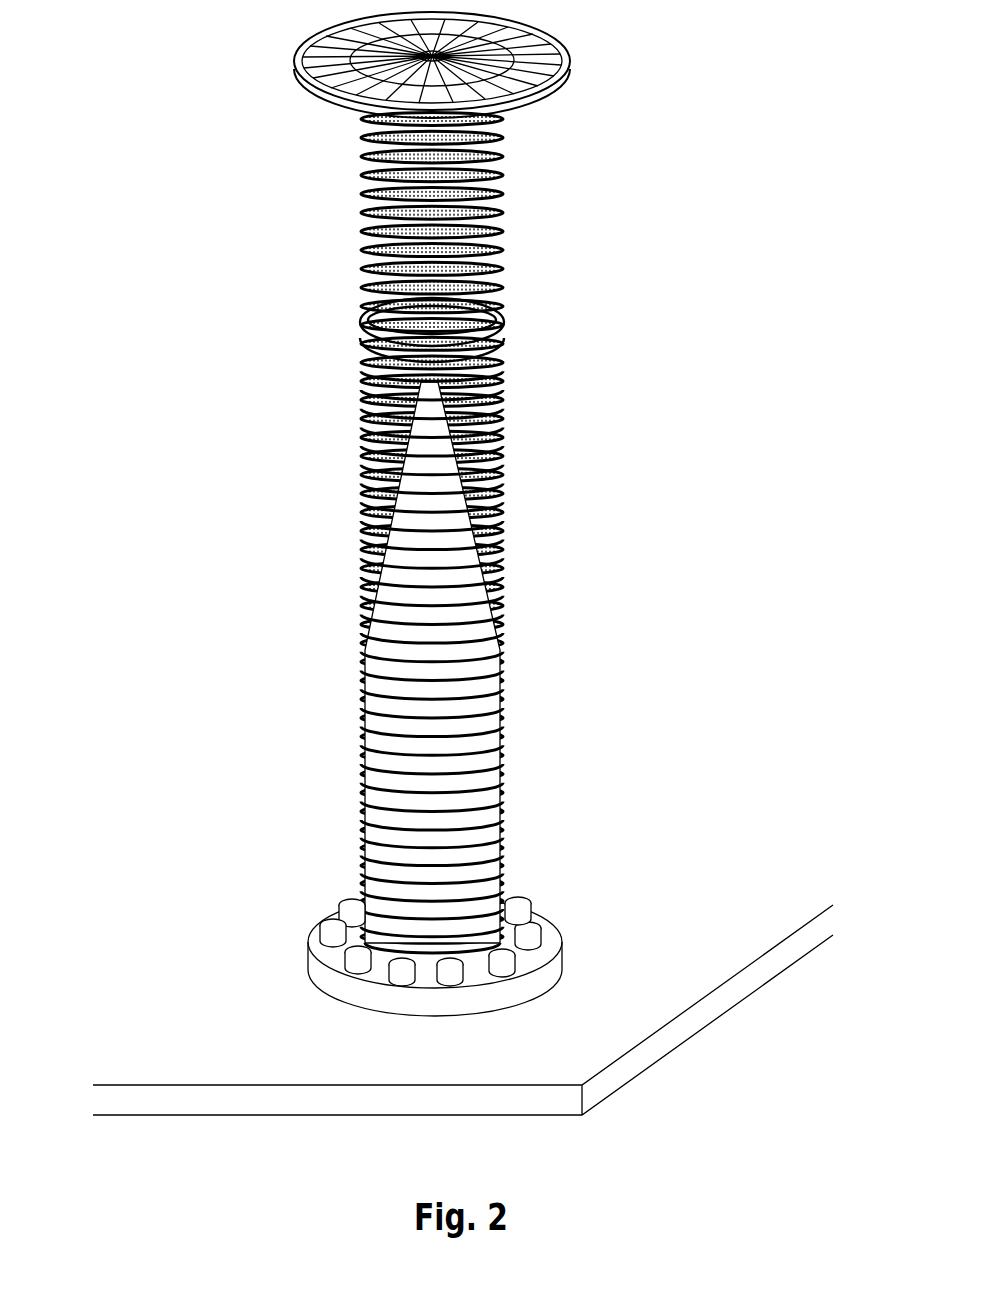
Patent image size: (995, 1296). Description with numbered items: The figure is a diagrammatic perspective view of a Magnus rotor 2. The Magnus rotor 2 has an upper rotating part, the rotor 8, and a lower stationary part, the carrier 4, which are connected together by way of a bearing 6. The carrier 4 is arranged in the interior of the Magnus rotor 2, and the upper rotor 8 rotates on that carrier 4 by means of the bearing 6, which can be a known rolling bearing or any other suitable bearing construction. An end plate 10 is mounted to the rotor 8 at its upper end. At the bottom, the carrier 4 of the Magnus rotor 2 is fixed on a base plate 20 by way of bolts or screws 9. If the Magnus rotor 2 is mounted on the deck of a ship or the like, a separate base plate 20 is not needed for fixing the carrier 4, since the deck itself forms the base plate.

The Magnus rotor 2 is at (376, 514).
The carrier 4 is at (472, 612).
The bearing 6 is at (494, 354).
The rotor 8 is at (412, 533).
The bolts or screws 9 is at (519, 903).
The end plate 10 is at (292, 68).
The base plate 20 is at (172, 1048).